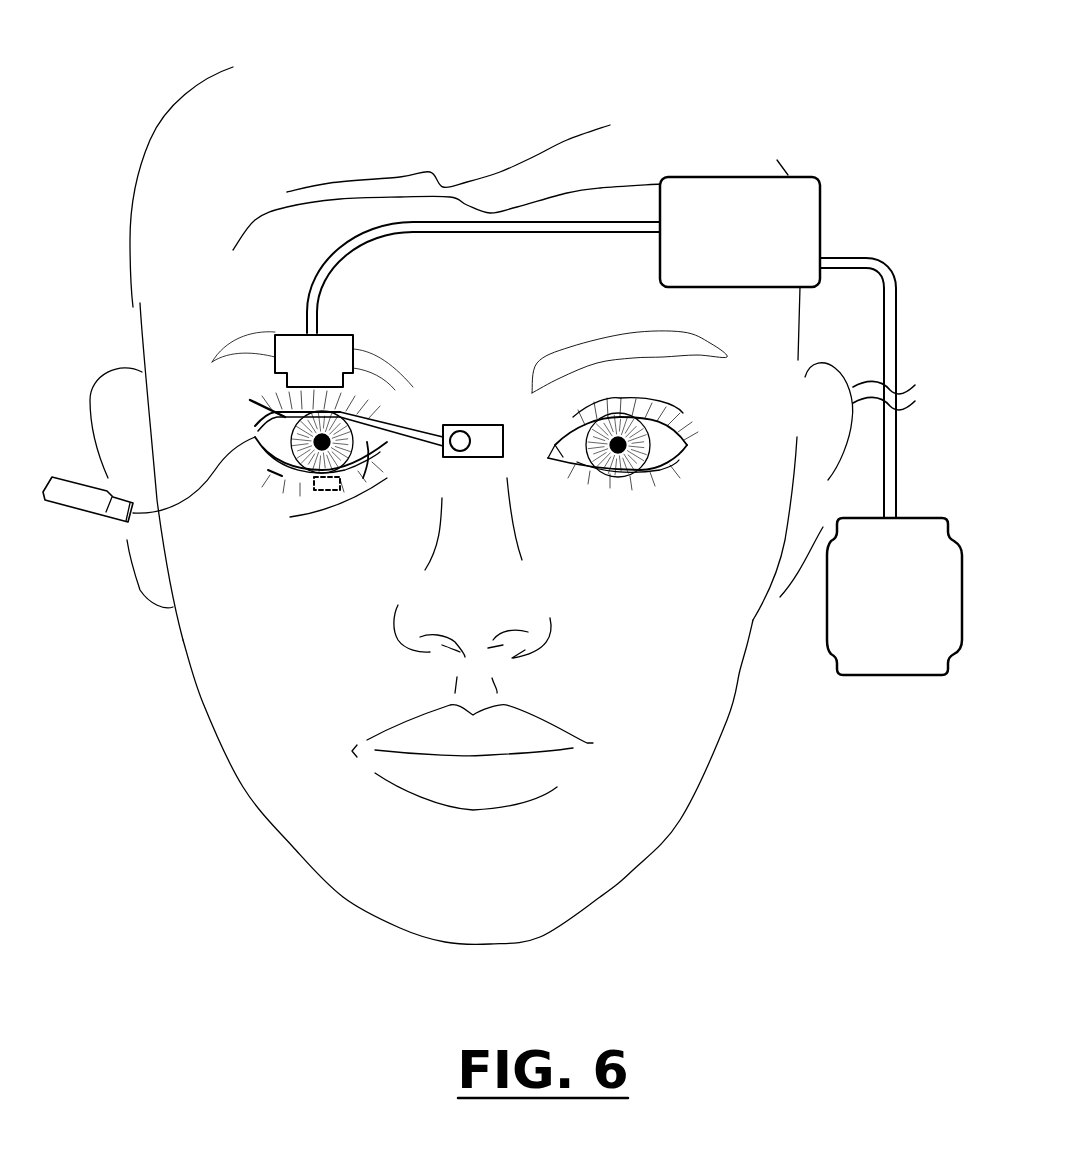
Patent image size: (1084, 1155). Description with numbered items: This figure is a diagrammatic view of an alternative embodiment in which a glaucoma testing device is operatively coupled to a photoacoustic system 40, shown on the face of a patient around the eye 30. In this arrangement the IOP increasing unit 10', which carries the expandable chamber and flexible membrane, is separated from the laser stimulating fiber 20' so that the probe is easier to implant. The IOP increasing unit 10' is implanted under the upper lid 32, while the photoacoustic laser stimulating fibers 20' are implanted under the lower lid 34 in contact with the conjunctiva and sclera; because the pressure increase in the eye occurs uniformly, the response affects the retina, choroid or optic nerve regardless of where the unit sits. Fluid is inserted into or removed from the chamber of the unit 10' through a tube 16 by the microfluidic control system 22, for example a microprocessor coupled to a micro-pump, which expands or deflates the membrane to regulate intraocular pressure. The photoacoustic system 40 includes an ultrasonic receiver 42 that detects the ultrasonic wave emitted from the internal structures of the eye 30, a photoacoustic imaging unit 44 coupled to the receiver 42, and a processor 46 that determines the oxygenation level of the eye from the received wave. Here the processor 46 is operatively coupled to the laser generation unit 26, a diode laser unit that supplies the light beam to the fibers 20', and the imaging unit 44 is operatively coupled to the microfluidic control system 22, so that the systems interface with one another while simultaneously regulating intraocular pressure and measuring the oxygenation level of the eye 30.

The IOP increasing unit 10' is at (355, 374).
The tubing 16 is at (400, 440).
The laser stimulating fiber 20' is at (297, 528).
The microfluidic control system 22 is at (482, 437).
The laser generation unit 26 is at (105, 503).
The eye 30 is at (367, 445).
The upper eyelid 32 is at (285, 405).
The lower eyelid 34 is at (275, 473).
The photoacoustic system 40 is at (633, 277).
The ultrasonic receiver 42 is at (327, 360).
The photoacoustic imaging unit 44 is at (753, 190).
The processor 46 is at (867, 607).